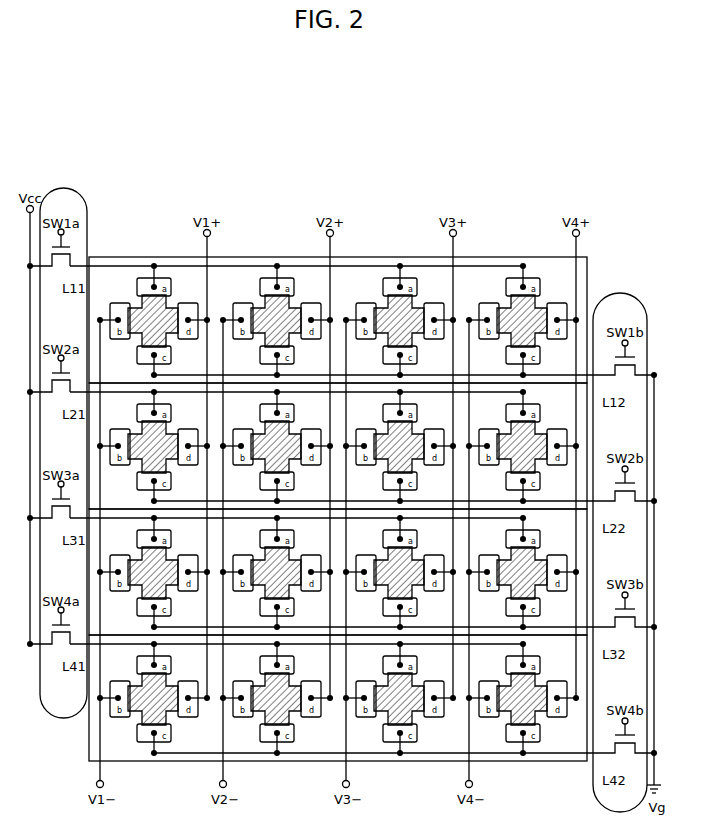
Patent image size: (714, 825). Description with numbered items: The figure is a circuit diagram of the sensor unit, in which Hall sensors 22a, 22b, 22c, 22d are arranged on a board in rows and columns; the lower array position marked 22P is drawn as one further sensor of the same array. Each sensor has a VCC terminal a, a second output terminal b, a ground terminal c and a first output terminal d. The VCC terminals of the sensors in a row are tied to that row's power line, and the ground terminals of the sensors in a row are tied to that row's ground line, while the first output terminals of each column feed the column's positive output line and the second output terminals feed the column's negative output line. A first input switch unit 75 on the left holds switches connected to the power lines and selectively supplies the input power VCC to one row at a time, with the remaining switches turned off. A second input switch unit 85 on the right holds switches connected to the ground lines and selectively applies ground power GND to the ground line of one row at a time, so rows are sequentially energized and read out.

The first input switch unit 75 is at (68, 188).
The second input switch unit 85 is at (619, 293).
The Hall sensor 22a is at (143, 308).
The Hall sensor 22b is at (266, 308).
The Hall sensor 22c is at (388, 308).
The Hall sensor 22d is at (512, 308).
The Hall element (third column, fourth row) 22P is at (414, 712).